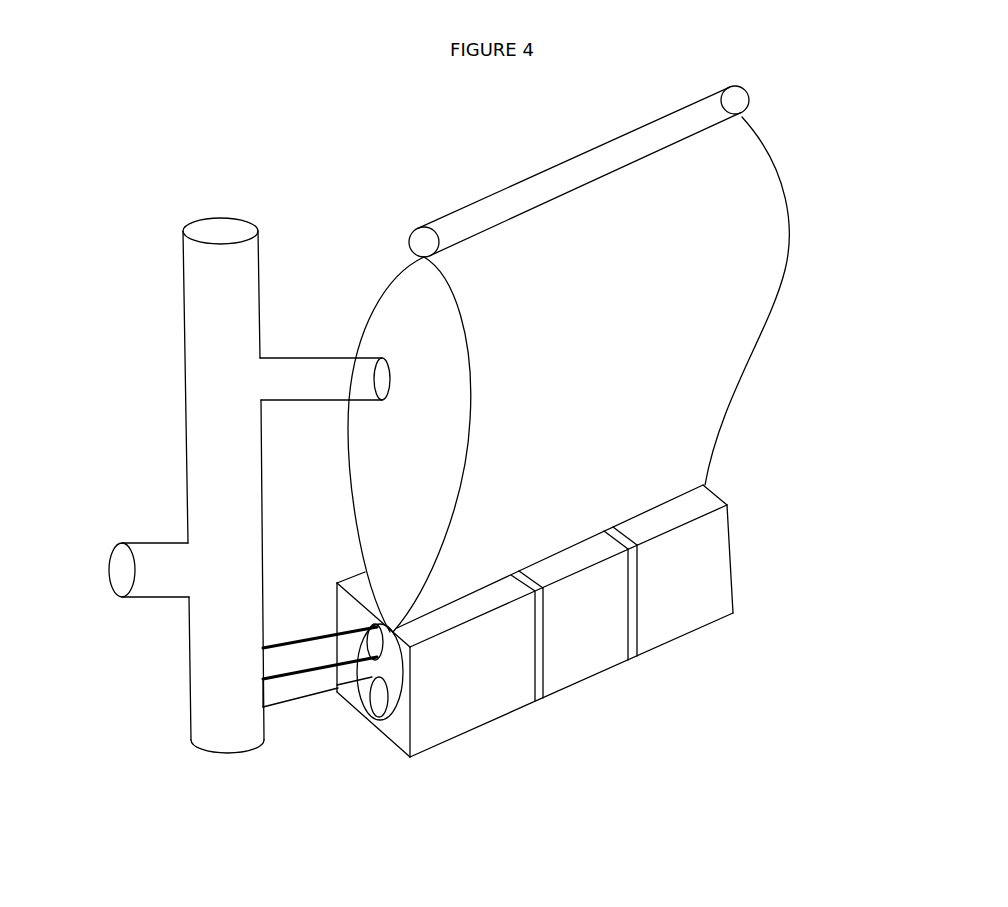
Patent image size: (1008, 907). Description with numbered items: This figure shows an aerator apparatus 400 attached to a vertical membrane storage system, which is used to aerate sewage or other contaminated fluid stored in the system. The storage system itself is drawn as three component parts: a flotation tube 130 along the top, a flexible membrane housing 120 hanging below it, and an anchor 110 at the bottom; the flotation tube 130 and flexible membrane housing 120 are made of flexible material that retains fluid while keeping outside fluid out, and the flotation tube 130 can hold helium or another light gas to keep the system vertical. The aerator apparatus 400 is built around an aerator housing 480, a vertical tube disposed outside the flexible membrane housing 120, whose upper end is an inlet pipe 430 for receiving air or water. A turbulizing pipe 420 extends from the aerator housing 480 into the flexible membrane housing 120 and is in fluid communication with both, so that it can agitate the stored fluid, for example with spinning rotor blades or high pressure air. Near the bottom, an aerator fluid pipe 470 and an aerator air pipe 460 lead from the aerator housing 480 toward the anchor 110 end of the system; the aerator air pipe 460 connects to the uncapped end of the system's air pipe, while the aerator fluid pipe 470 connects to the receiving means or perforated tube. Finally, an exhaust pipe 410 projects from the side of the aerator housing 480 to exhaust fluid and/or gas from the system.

The aerator apparatus 400 is at (163, 198).
The aerator housing 480 is at (168, 381).
The inlet pipe 430 is at (244, 220).
The turbulizing pipe 420 is at (313, 343).
The exhaust pipe 410 is at (113, 599).
The aerator fluid pipe 470 is at (291, 676).
The aerator air pipe 460 is at (336, 723).
The anchor 110 is at (511, 708).
The flotation tube 130 is at (466, 199).
The flexible membrane housing 120 is at (744, 261).